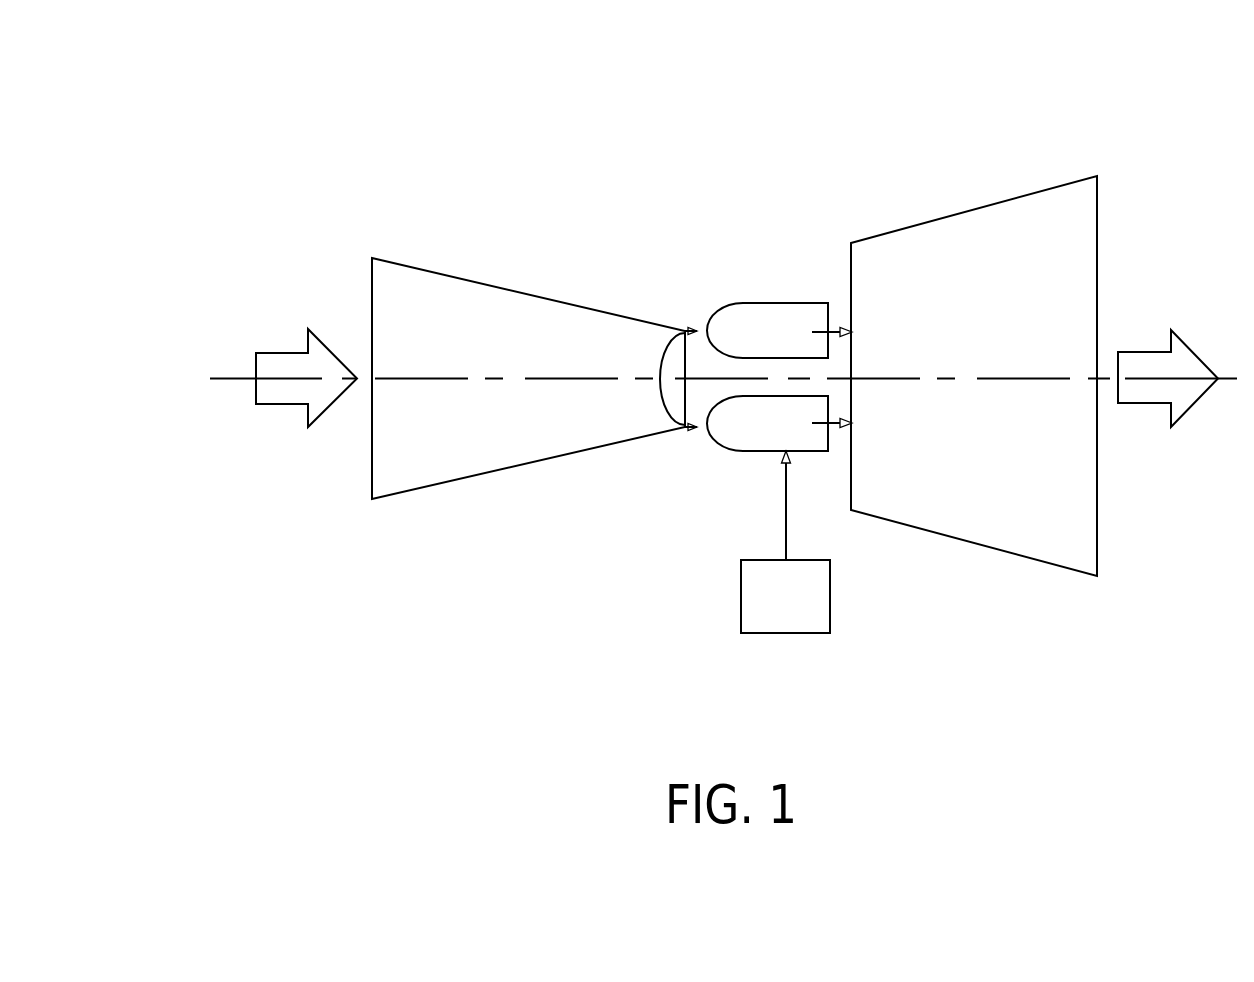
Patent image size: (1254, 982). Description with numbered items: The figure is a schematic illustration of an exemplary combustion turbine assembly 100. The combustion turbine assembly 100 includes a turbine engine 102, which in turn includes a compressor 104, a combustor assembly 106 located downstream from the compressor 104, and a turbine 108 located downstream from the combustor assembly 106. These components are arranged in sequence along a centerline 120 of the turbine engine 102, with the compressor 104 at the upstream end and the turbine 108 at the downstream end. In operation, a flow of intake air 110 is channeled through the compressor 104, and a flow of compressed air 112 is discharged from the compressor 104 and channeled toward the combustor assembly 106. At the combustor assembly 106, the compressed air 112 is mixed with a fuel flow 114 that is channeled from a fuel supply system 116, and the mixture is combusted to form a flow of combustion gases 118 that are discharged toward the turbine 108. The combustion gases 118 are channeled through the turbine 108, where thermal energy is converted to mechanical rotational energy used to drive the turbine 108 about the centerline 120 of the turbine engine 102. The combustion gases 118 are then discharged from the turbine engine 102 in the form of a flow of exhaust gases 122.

The combustion turbine assembly 100 is at (327, 142).
The turbine engine 102 is at (438, 223).
The compressor 104 is at (455, 273).
The combustor assembly 106 is at (780, 303).
The turbine 108 is at (963, 210).
The flow of intake air 110 is at (283, 353).
The flow of compressed air 112 is at (662, 408).
The fuel flow 114 is at (785, 498).
The fuel supply system 116 is at (810, 612).
The flow of combustion gases 118 is at (845, 425).
The centerline 120 is at (225, 378).
The flow of exhaust gases 122 is at (1135, 352).